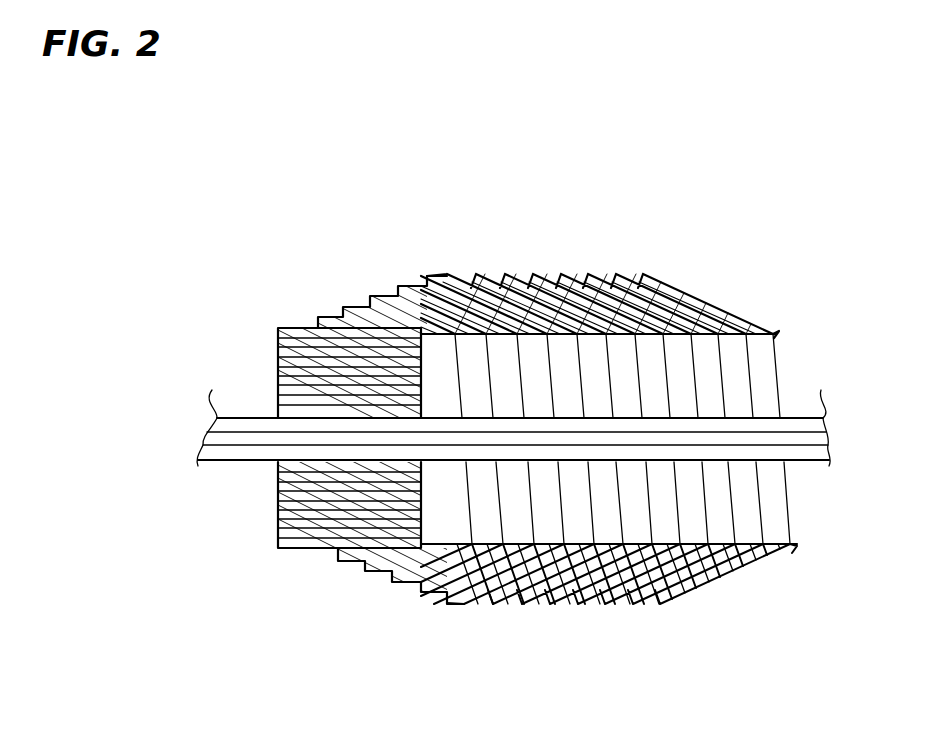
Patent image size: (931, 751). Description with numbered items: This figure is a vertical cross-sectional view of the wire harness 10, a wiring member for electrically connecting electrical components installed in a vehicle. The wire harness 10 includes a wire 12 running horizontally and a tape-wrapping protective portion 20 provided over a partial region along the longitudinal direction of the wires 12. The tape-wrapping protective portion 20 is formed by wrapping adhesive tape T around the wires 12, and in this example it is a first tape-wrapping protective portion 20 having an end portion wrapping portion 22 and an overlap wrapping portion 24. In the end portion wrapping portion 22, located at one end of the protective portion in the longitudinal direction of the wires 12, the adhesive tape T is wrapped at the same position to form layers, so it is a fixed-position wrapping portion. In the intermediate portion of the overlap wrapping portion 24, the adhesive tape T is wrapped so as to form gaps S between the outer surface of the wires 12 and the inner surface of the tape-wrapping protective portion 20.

The wire harness 10 is at (247, 143).
The wire 12 is at (251, 458).
The tape-wrapping protective portion 20 is at (366, 382).
The end portion wrapping portion 22 is at (300, 325).
The overlap wrapping portion 24 is at (263, 228).
The adhesive tape T is at (648, 274).
The gap S is at (752, 527).